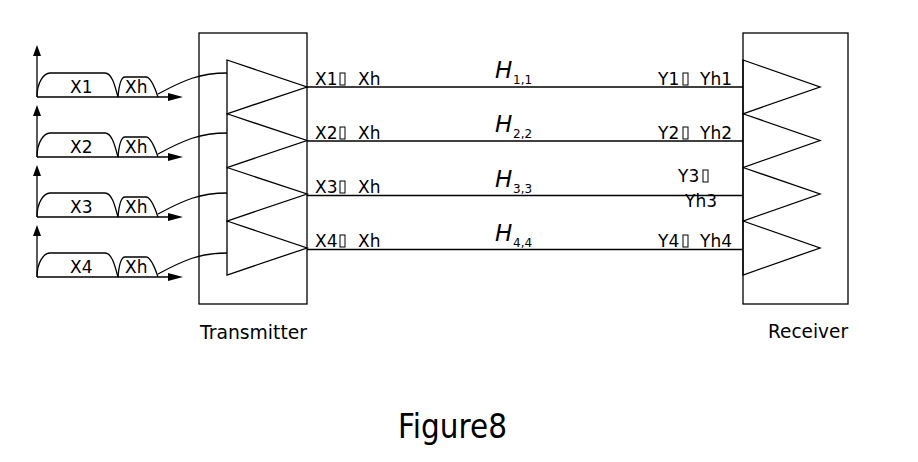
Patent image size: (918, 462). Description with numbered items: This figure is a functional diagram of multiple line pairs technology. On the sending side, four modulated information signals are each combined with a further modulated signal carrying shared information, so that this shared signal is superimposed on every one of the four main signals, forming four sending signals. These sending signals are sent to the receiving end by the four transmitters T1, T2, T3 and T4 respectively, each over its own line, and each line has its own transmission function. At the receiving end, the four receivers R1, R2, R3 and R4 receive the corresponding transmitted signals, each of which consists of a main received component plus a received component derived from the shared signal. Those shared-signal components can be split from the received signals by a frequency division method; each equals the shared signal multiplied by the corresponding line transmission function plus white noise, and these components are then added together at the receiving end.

The transmitter T1 is at (267, 87).
The transmitter T2 is at (267, 141).
The transmitter T3 is at (267, 195).
The transmitter T4 is at (267, 248).
The receiver R1 is at (781, 87).
The receiver R2 is at (781, 141).
The receiver R3 is at (781, 195).
The receiver R4 is at (781, 248).